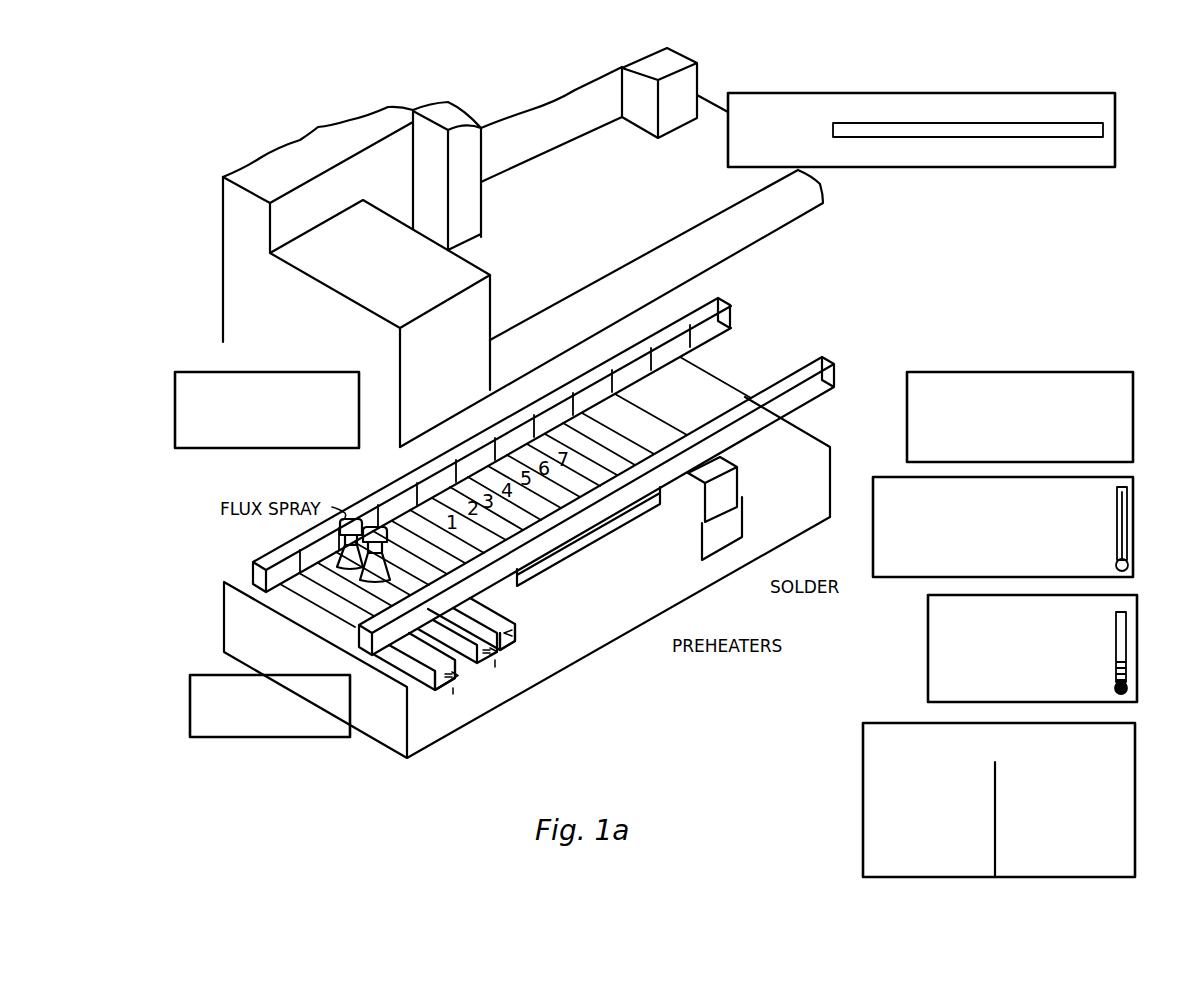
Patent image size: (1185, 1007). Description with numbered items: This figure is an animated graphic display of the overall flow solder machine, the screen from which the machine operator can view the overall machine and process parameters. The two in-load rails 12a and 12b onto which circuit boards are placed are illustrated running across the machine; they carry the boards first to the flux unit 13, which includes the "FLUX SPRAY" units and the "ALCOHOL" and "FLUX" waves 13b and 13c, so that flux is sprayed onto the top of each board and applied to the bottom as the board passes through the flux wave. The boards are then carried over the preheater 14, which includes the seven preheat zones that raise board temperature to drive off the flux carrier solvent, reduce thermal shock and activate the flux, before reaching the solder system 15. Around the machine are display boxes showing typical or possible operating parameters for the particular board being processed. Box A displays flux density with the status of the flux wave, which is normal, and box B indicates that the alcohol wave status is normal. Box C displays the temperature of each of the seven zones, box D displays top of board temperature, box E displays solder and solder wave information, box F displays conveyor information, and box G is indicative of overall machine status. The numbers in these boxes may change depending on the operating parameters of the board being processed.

The in-load rail 12a is at (730, 307).
The in-load rail 12b is at (830, 373).
The flux module 13 is at (505, 692).
The alcohol wave 13b is at (463, 675).
The flux wave 13c is at (473, 597).
The IR preheaters 14 is at (582, 548).
The solder system 15 is at (723, 508).
The display box A is at (175, 425).
The display box B is at (190, 686).
The display box C is at (1130, 745).
The display box D is at (1137, 635).
The display box E is at (1133, 505).
The display box F is at (1133, 400).
The display box G is at (903, 93).